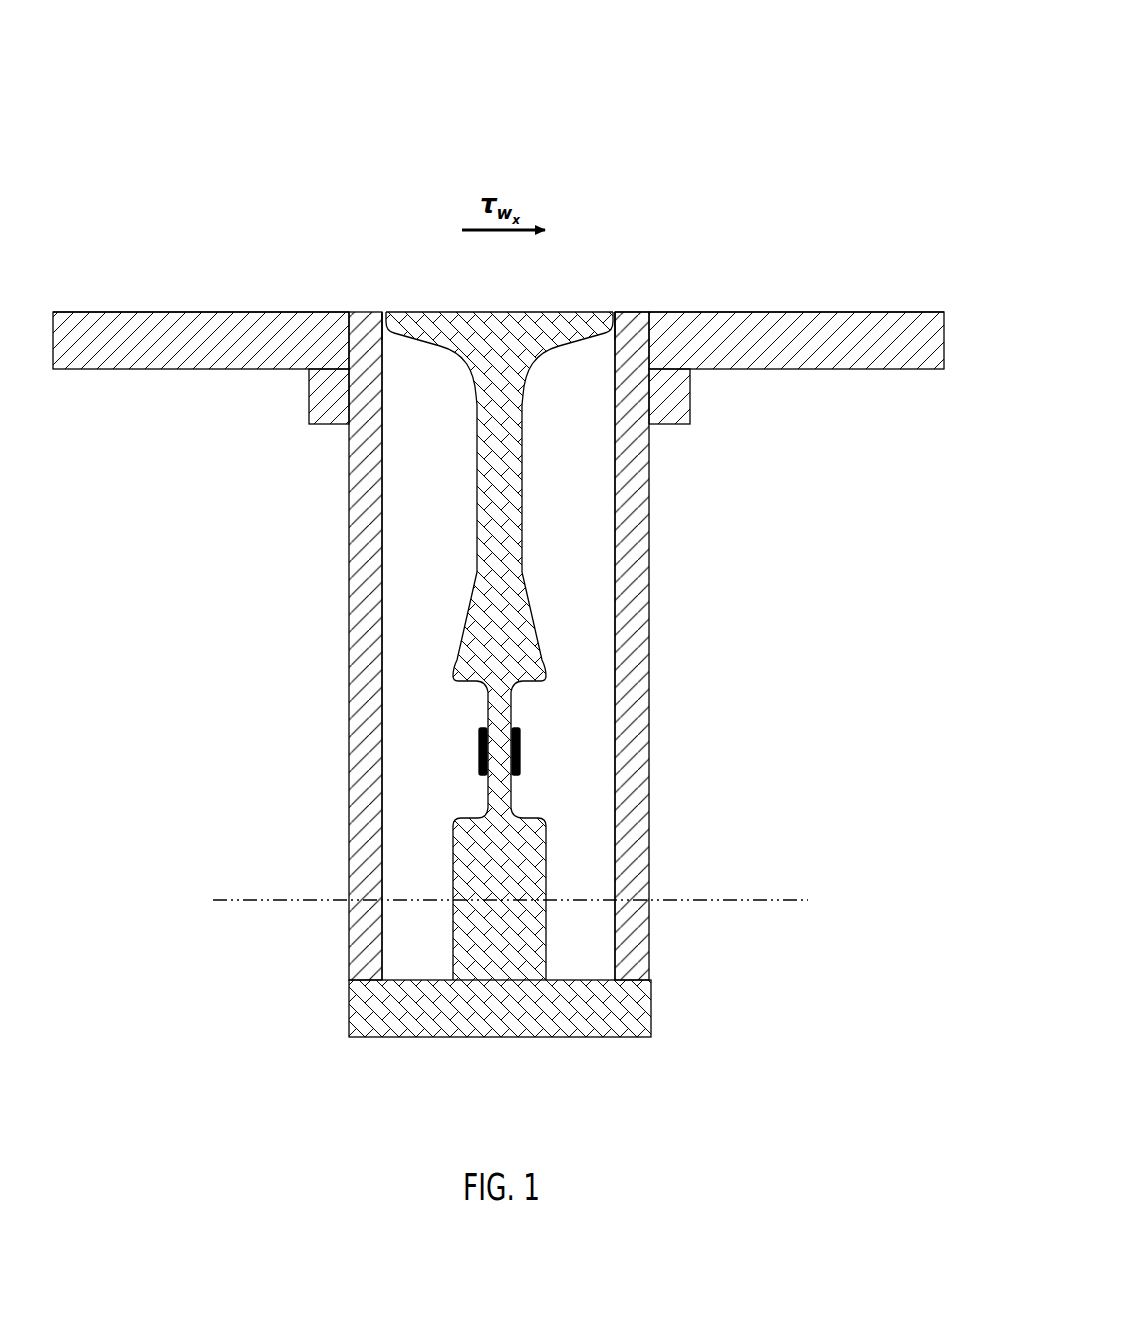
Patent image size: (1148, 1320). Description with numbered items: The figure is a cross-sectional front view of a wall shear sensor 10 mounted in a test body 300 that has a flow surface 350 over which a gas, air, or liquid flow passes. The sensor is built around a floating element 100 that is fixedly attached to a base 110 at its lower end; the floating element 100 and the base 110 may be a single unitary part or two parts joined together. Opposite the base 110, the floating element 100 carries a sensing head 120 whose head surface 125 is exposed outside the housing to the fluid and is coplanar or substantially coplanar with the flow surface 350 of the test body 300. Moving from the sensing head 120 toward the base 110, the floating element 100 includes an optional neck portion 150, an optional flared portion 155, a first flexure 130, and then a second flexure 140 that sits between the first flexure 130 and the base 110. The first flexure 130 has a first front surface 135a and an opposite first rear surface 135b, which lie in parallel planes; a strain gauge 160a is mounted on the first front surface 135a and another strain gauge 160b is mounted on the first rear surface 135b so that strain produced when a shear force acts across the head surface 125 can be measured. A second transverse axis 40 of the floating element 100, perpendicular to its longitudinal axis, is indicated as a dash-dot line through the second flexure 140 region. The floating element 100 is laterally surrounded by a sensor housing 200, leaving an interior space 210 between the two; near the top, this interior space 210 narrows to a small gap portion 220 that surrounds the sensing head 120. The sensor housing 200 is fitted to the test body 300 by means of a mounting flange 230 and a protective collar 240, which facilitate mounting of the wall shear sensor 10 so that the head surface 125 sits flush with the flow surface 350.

The wall shear sensor 10 is at (747, 143).
The second transverse axis 40 is at (255, 889).
The floating element 100 is at (544, 504).
The base 110 is at (348, 1005).
The sensing head 120 is at (562, 318).
The head surface 125 is at (432, 307).
The first flexure 130 is at (500, 790).
The first front surface 135a is at (486, 703).
The first rear surface 135b is at (513, 703).
The second flexure 140 is at (455, 860).
The neck portion 150 is at (478, 466).
The flared portion 155 is at (462, 640).
The strain gauge 160a is at (478, 750).
The strain gauge 160b is at (522, 752).
The sensor housing 200 is at (349, 700).
The interior space 210 is at (422, 561).
The small gap portion 220 is at (382, 306).
The mounting flange 230 is at (676, 403).
The protective collar 240 is at (641, 322).
The test body 300 is at (148, 319).
The flow surface 350 is at (228, 309).